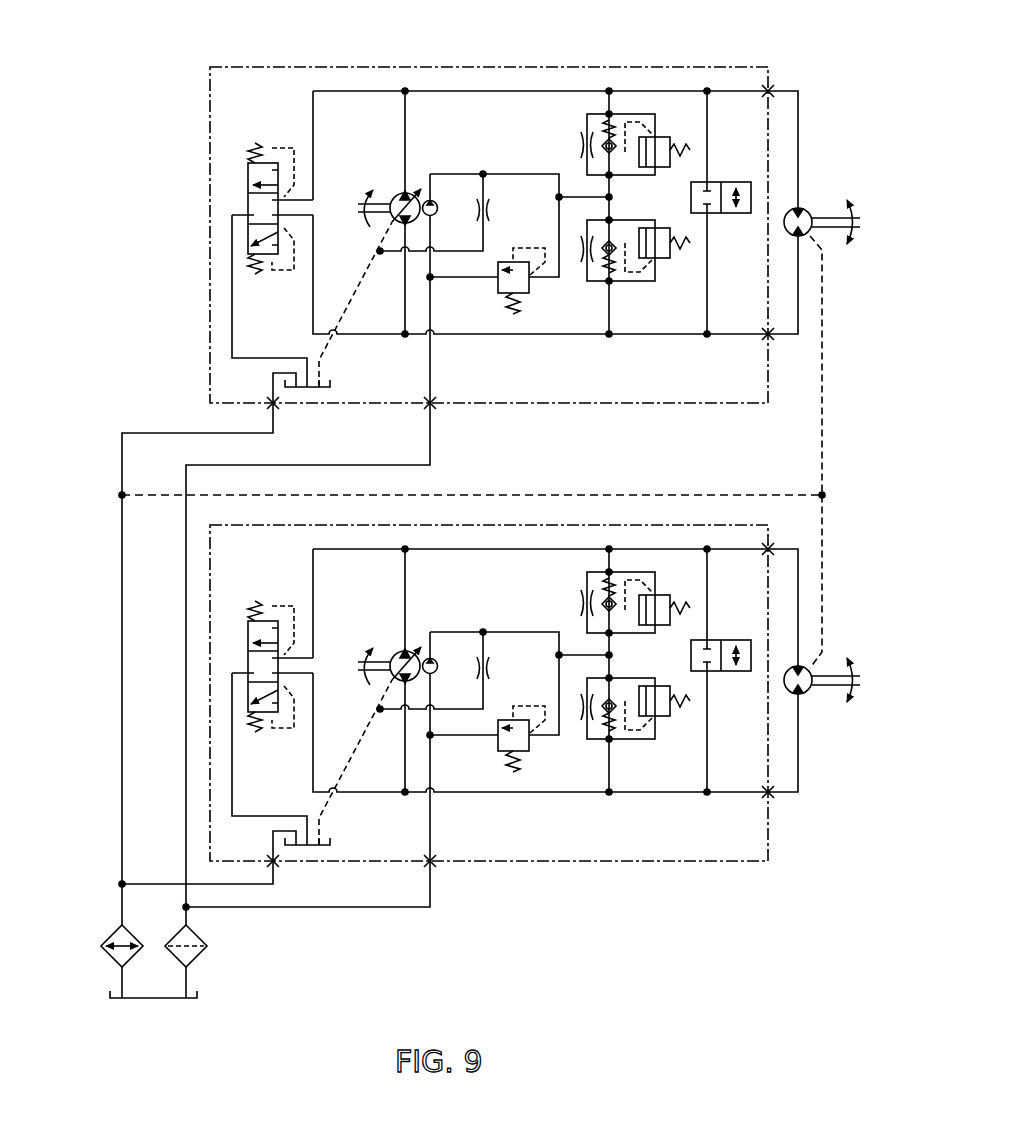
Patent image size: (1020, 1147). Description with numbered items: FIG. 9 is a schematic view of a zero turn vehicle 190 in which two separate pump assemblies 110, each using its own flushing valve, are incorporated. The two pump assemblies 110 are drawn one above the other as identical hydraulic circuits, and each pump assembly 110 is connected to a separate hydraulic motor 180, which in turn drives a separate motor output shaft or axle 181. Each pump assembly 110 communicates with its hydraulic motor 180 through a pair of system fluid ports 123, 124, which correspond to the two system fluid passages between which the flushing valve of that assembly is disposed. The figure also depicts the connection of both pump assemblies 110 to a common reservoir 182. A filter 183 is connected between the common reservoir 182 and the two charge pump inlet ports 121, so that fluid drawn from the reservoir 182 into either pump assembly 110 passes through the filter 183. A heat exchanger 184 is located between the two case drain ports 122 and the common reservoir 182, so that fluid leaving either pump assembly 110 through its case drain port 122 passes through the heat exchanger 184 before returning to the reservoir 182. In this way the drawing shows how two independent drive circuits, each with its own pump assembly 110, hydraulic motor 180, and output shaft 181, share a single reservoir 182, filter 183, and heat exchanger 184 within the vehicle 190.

The zero turn vehicle 190 is at (122, 66).
The pump assembly 110 is at (684, 67).
The charge pump inlet port 121 is at (433, 408).
The case drain port 122 is at (276, 408).
The system fluid port 123 is at (772, 90).
The system fluid port 124 is at (771, 339).
The hydraulic motor 180 is at (808, 212).
The motor output shaft or axle 181 is at (826, 233).
The common reservoir 182 is at (194, 982).
The filter 183 is at (199, 936).
The heat exchanger 184 is at (109, 938).